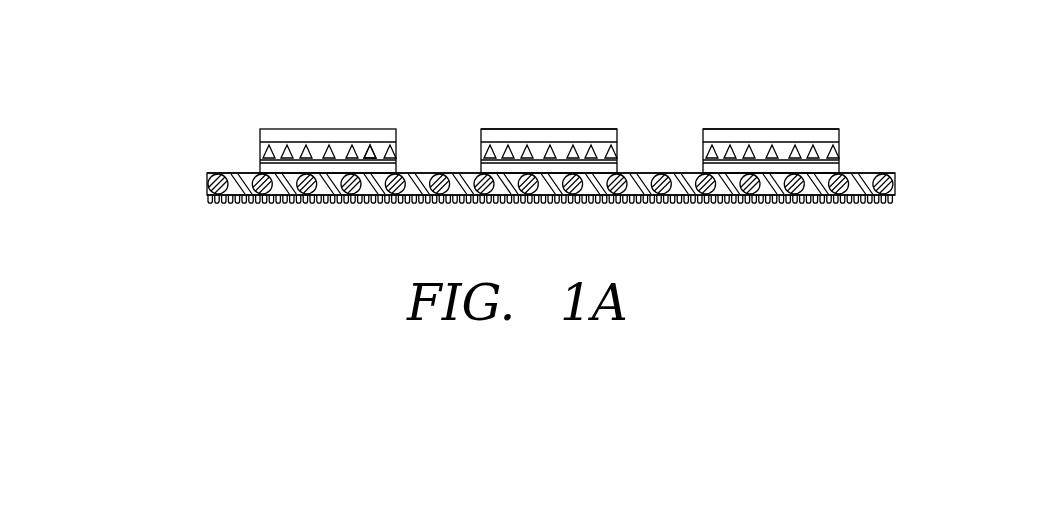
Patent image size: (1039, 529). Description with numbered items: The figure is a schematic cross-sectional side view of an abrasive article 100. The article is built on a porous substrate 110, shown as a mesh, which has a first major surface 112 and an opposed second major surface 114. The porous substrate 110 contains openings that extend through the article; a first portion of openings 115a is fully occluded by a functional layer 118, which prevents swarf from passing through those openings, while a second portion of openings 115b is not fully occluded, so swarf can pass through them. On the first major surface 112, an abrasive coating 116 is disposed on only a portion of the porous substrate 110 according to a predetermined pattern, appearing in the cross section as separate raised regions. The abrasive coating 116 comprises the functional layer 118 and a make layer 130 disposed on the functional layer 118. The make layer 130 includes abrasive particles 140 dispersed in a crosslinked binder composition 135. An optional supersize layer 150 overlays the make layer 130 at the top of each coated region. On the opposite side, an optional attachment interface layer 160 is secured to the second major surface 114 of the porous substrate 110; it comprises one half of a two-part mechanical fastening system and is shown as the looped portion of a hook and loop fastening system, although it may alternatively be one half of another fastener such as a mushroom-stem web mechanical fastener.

The abrasive article 100 is at (855, 62).
The porous substrate 110 is at (568, 193).
The first major surface 112 is at (227, 177).
The second major surface 114 is at (225, 207).
The first portion of openings 115a is at (772, 193).
The second portion of openings 115b is at (638, 193).
The abrasive coating 116 is at (789, 122).
The functional layer 118 is at (838, 165).
The make layer 130 is at (587, 115).
The crosslinked binder composition 135 is at (317, 147).
The abrasive particles 140 is at (365, 150).
The supersize layer 150 is at (527, 128).
The attachment interface layer 160 is at (888, 200).